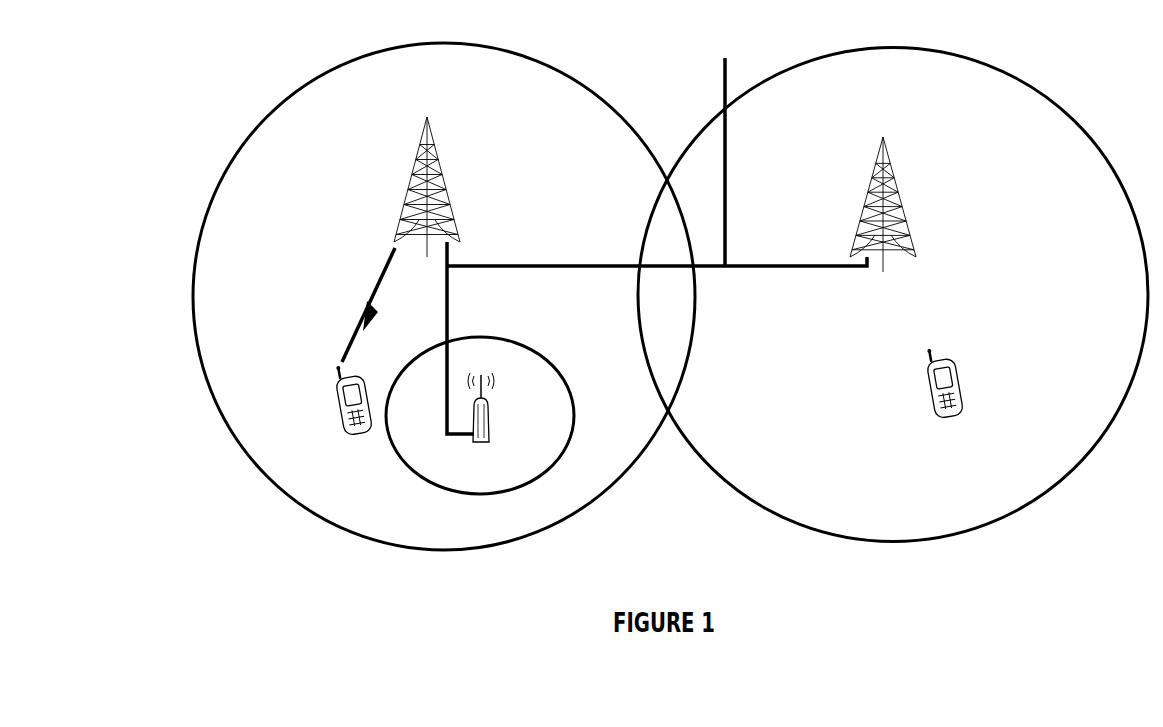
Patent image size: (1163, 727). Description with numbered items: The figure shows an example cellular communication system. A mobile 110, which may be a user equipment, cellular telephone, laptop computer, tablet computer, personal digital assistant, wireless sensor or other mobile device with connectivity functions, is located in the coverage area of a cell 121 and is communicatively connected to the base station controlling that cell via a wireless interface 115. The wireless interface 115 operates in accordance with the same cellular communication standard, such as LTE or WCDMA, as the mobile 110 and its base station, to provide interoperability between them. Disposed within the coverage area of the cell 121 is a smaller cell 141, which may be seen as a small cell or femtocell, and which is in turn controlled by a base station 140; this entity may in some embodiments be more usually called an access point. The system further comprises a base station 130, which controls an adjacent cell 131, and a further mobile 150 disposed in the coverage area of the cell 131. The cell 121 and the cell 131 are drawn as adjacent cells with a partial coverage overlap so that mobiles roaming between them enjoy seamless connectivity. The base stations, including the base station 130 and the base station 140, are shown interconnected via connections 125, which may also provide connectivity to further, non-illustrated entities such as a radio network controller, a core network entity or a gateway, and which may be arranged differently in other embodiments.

The mobile 110 is at (353, 407).
The wireless interface 115 is at (368, 305).
The cell 121 is at (444, 296).
The connections 125 is at (657, 246).
The base station 130 is at (655, 198).
The cell 131 is at (893, 295).
The base station 140 is at (481, 416).
The cell 141 is at (480, 420).
The mobile 150 is at (944, 391).